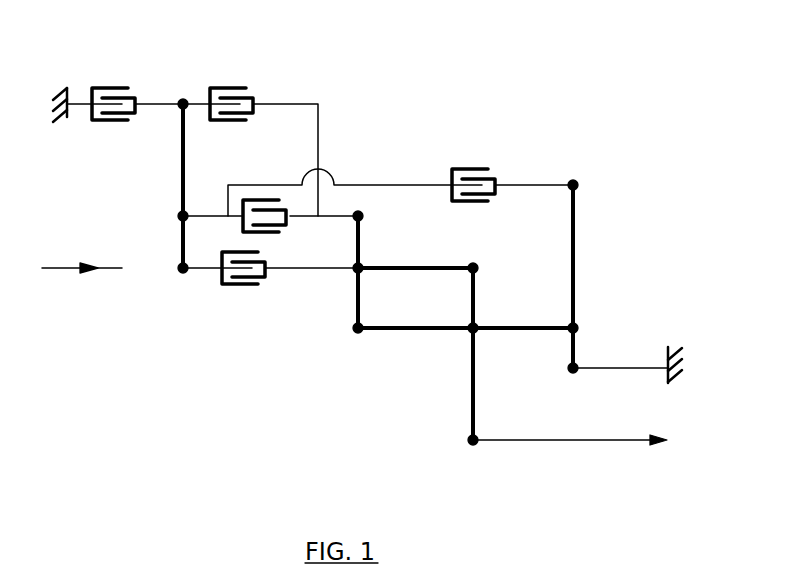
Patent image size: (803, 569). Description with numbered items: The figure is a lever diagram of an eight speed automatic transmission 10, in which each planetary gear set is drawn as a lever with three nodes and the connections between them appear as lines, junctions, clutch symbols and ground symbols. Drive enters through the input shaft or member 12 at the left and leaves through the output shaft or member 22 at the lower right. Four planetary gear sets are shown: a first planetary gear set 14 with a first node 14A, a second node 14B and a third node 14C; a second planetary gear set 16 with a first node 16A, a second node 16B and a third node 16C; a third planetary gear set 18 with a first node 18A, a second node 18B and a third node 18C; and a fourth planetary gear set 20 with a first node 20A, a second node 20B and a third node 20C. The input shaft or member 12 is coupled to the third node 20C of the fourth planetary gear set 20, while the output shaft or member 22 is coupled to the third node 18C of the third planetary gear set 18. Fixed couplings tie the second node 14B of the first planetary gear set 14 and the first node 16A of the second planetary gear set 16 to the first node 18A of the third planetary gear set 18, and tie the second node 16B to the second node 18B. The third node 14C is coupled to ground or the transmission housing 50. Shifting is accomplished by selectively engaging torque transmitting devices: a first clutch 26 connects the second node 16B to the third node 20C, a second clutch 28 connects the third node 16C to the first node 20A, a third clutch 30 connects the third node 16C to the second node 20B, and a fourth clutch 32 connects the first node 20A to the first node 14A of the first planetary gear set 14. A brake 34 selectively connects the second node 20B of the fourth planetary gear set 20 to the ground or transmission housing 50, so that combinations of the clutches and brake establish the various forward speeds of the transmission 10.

The automatic transmission 10 is at (405, 98).
The input shaft or member 12 is at (100, 270).
The first planetary gear set 14 is at (584, 285).
The first node 14A is at (577, 185).
The second node 14B is at (577, 328).
The third node 14C is at (577, 368).
The second planetary gear set 16 is at (403, 305).
The first node 16A is at (362, 328).
The second node 16B is at (362, 268).
The third node 16C is at (362, 215).
The third planetary gear set 18 is at (489, 381).
The first node 18A is at (477, 328).
The second node 18B is at (477, 268).
The third node 18C is at (470, 439).
The fourth planetary gear set 20 is at (237, 199).
The first node 20A is at (183, 216).
The second node 20B is at (183, 104).
The third node 20C is at (183, 268).
The output shaft or member 22 is at (620, 440).
The first clutch 26 is at (246, 284).
The second clutch 28 is at (270, 232).
The third clutch 30 is at (233, 120).
The fourth clutch 32 is at (477, 202).
The brake 34 is at (118, 120).
The ground or transmission housing 50 is at (72, 112).